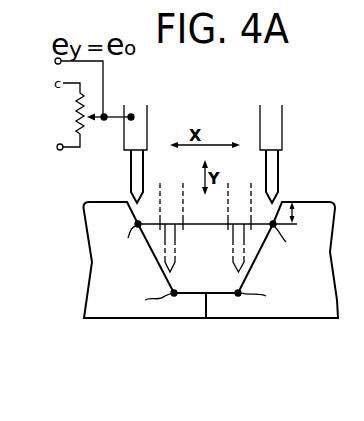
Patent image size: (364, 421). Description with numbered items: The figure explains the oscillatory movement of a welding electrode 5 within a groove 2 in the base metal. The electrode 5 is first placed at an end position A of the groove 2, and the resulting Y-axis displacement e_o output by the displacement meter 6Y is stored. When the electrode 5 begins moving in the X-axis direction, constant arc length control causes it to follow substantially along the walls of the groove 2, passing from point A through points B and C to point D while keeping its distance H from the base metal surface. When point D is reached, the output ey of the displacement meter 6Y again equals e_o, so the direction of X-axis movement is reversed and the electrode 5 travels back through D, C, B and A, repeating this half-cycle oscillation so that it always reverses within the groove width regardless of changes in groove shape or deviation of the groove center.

The groove 2 is at (165, 287).
The electrode 5 is at (138, 127).
The displacement meter 6Y is at (94, 129).